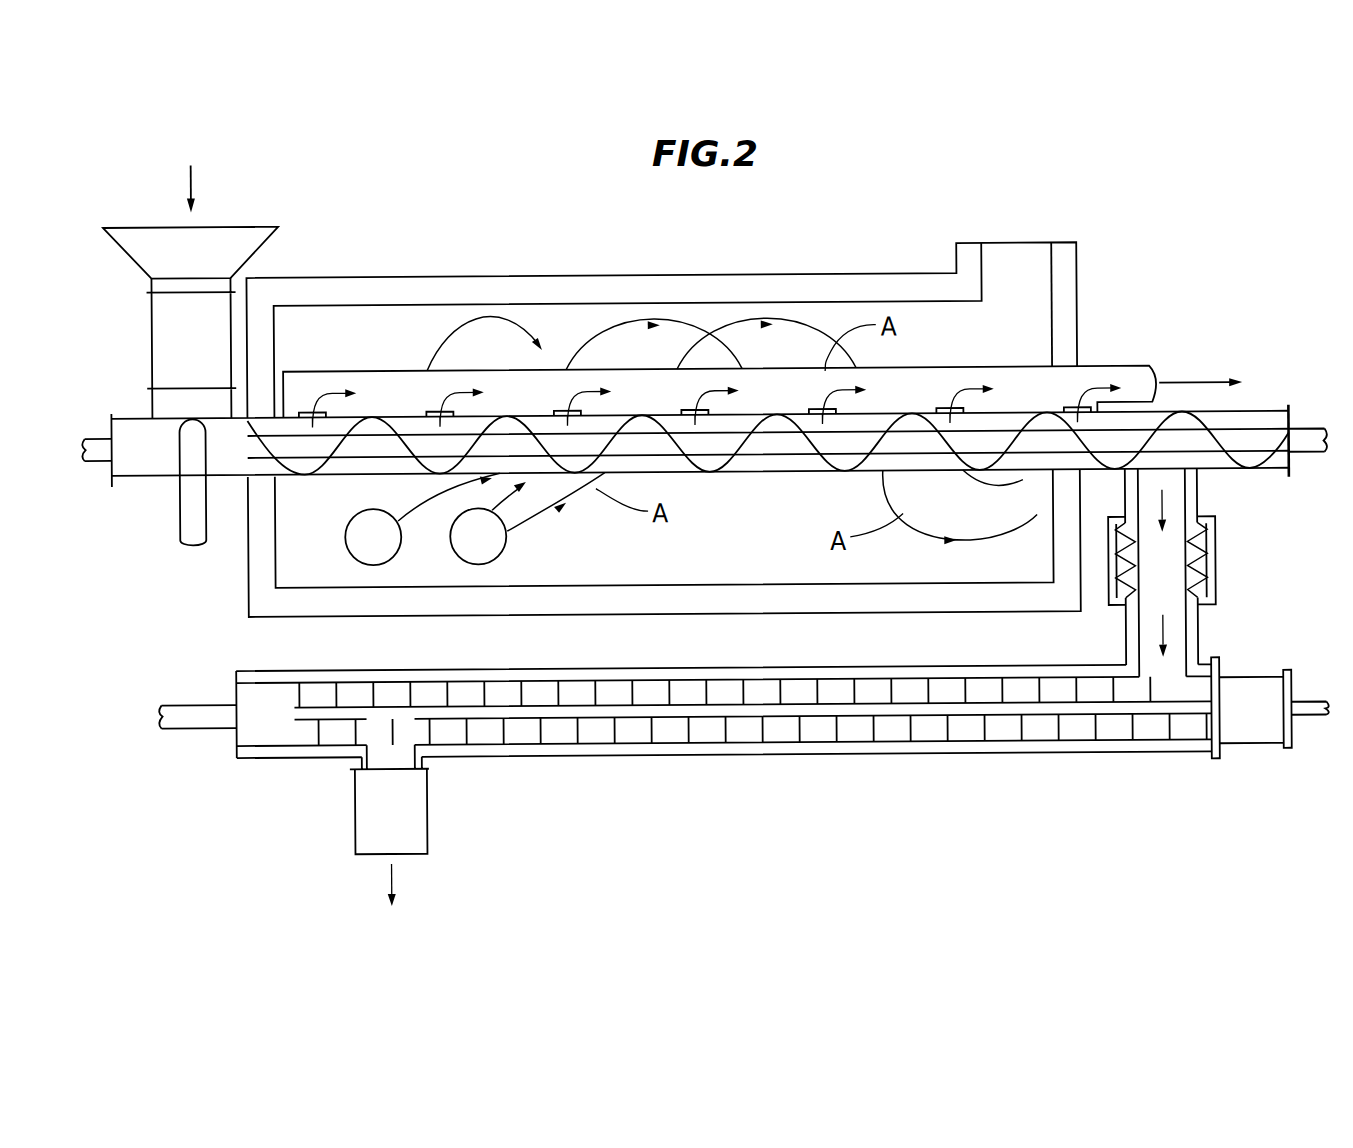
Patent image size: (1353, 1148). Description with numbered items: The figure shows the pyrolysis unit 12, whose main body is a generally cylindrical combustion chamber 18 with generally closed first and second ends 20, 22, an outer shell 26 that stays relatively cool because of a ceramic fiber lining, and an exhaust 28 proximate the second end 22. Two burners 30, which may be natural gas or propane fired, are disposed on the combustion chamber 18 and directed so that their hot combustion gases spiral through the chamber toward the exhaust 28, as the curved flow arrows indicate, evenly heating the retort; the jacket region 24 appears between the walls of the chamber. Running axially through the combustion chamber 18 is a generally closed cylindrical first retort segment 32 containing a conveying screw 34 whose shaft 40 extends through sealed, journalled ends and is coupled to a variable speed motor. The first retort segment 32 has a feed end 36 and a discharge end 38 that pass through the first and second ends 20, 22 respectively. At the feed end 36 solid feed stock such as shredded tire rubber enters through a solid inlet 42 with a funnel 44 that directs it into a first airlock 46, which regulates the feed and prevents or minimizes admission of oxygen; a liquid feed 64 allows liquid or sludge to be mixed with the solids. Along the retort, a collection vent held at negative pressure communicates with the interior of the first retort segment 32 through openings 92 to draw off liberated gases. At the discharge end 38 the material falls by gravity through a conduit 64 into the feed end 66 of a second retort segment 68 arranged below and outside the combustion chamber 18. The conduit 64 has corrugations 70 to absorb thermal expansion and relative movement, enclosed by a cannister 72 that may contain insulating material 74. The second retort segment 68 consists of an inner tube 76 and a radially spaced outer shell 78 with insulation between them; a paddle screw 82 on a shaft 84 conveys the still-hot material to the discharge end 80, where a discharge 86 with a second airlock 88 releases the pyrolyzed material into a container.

The pyrolysis unit 12 is at (862, 177).
The combustion chamber 18 is at (513, 278).
The first end 20 is at (247, 577).
The second end 22 is at (1082, 294).
The insulation jacket 24 is at (402, 290).
The outer shell 26 is at (863, 276).
The exhaust 28 is at (1043, 214).
The burners 30 is at (383, 546).
The first retort segment 32 is at (355, 476).
The screw 34 is at (393, 413).
The feed end 36 is at (158, 478).
The discharge end 38 is at (1265, 475).
The shaft 40 is at (86, 440).
The solid inlet 42 is at (299, 215).
The funnel 44 is at (262, 248).
The first airlock 46 is at (165, 334).
The conduit 64 is at (180, 531).
The feed end 66 is at (1242, 670).
The second retort segment 68 is at (1042, 767).
The corrugations 70 is at (1195, 566).
The cannister 72 is at (1217, 604).
The insulating material 74 is at (1133, 644).
The inner tube 76 is at (737, 749).
The outer shell 78 is at (893, 762).
The discharge end 80 is at (256, 828).
The paddle screw 82 is at (605, 749).
The shaft 84 is at (183, 730).
The discharge 86 is at (333, 781).
The second airlock 88 is at (385, 830).
The openings 92 is at (440, 416).